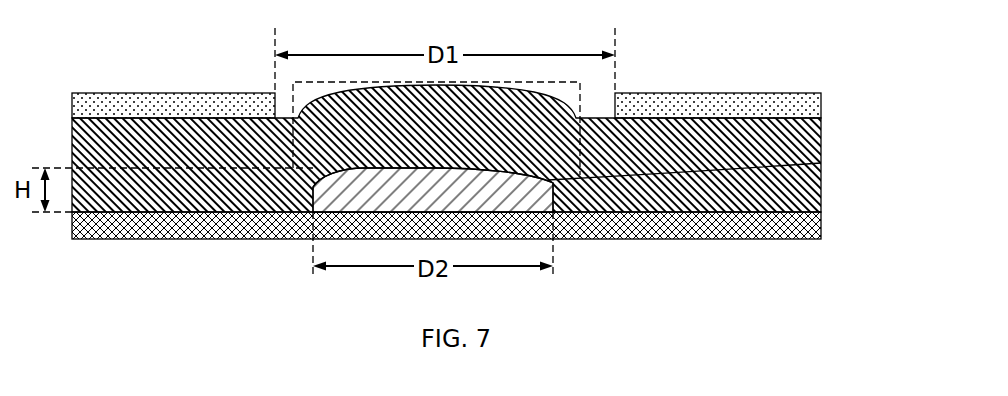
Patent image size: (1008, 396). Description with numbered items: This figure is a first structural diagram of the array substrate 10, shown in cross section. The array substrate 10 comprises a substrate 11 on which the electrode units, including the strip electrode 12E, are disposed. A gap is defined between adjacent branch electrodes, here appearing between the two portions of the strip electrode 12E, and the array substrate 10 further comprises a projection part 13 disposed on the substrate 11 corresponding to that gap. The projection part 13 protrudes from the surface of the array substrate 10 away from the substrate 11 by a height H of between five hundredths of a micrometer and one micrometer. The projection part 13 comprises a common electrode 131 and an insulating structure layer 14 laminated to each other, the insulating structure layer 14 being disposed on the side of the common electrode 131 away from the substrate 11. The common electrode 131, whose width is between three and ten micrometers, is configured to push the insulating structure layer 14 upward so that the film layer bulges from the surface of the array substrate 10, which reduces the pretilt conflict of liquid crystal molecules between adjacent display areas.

The array substrate 10 is at (472, 139).
The substrate 11 is at (813, 227).
The strip electrode 12E is at (808, 103).
The projection part 13 is at (582, 187).
The common electrode 131 is at (821, 163).
The insulating structure layer 14 is at (813, 187).